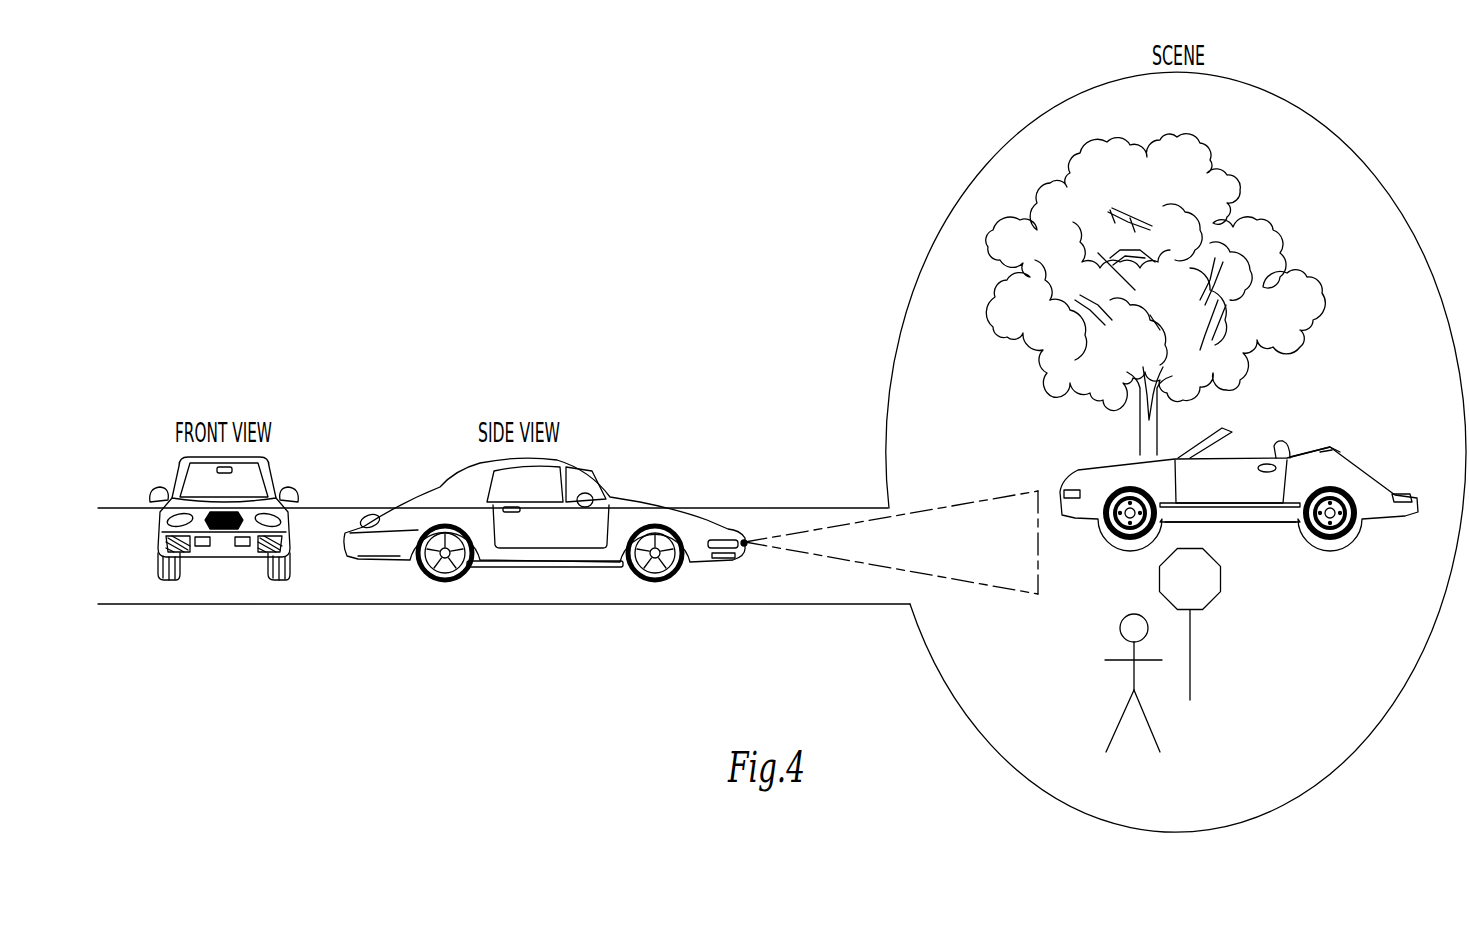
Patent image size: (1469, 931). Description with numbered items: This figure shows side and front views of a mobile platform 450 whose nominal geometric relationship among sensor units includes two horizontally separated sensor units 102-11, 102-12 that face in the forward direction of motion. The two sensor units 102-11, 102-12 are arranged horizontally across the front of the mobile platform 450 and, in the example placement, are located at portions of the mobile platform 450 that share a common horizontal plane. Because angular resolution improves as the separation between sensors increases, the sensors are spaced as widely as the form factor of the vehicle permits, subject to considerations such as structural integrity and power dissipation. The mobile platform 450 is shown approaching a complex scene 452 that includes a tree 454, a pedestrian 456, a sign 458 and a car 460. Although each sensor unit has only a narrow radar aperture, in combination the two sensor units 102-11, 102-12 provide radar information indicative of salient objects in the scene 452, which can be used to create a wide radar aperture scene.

The mobile platform 450 is at (168, 458).
The sensor unit 102-11 is at (203, 546).
The sensor unit 102-12 is at (243, 546).
The scene 452 is at (1342, 127).
The tree 454 is at (1275, 240).
The pedestrian 456 is at (1120, 628).
The sign 458 is at (1222, 581).
The car 460 is at (1330, 447).